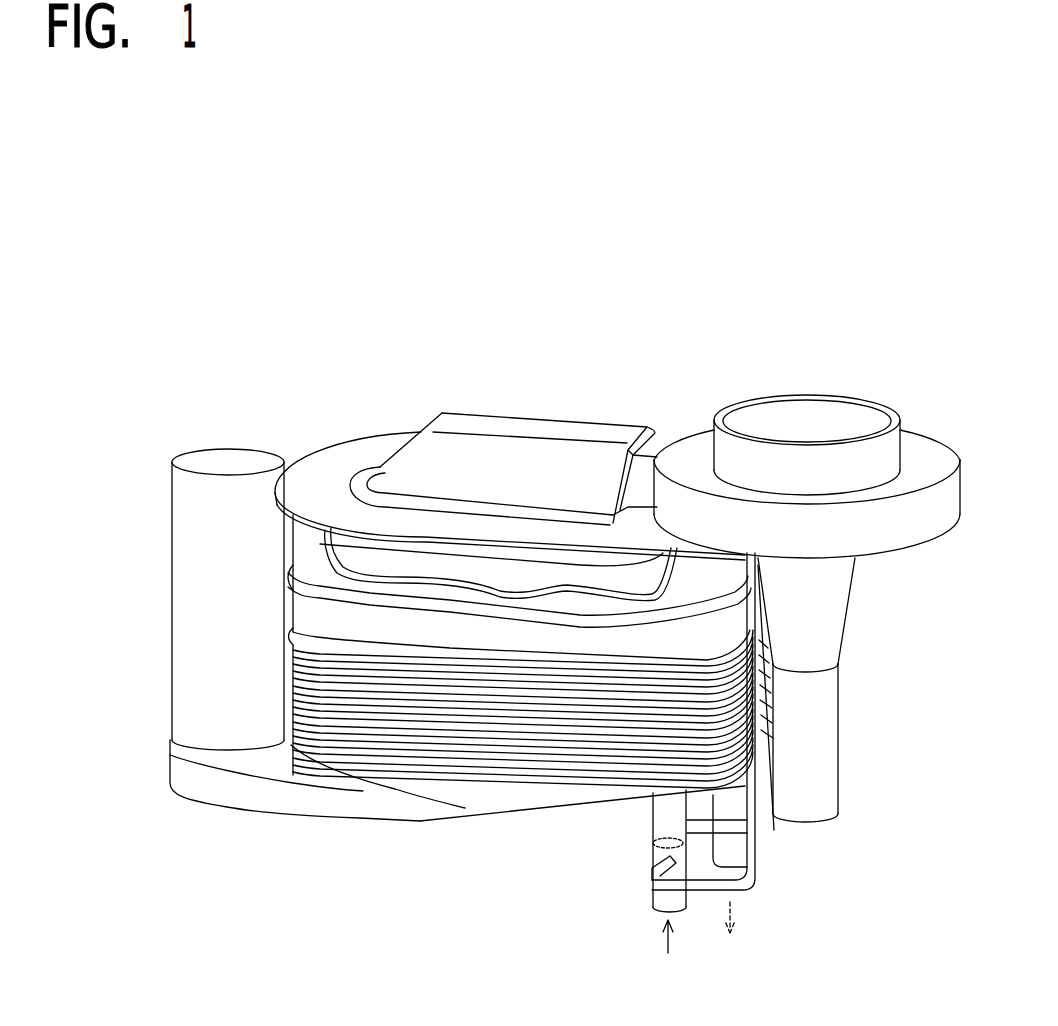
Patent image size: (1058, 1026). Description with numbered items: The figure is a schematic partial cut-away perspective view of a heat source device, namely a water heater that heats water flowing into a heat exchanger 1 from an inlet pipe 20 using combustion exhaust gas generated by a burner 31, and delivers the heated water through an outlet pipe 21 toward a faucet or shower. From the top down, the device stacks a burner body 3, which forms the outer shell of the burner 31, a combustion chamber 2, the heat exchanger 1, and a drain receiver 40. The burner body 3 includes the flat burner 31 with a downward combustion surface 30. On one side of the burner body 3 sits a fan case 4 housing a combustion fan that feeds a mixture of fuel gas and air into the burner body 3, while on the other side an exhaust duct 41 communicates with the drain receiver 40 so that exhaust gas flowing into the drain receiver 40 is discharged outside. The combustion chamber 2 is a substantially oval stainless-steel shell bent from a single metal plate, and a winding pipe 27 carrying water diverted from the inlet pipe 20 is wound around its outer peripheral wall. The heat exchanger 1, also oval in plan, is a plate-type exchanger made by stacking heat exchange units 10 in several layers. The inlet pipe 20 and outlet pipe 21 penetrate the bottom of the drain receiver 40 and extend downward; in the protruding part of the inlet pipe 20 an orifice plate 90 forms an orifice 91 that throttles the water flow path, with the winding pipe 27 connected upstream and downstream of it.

The heat exchanger 1 is at (291, 686).
The combustion chamber 2 is at (303, 612).
The burner body 3 is at (318, 475).
The fan case 4 is at (900, 538).
The heat exchange unit 10 is at (588, 720).
The inlet pipe 20 is at (678, 898).
The outlet pipe 21 is at (737, 853).
The winding pipe 27 is at (462, 614).
The combustion surface 30 is at (386, 557).
The burner 31 is at (425, 540).
The drain receiver 40 is at (462, 808).
The exhaust duct 41 is at (171, 508).
The orifice plate 90 is at (665, 852).
The orifice 91 is at (660, 838).